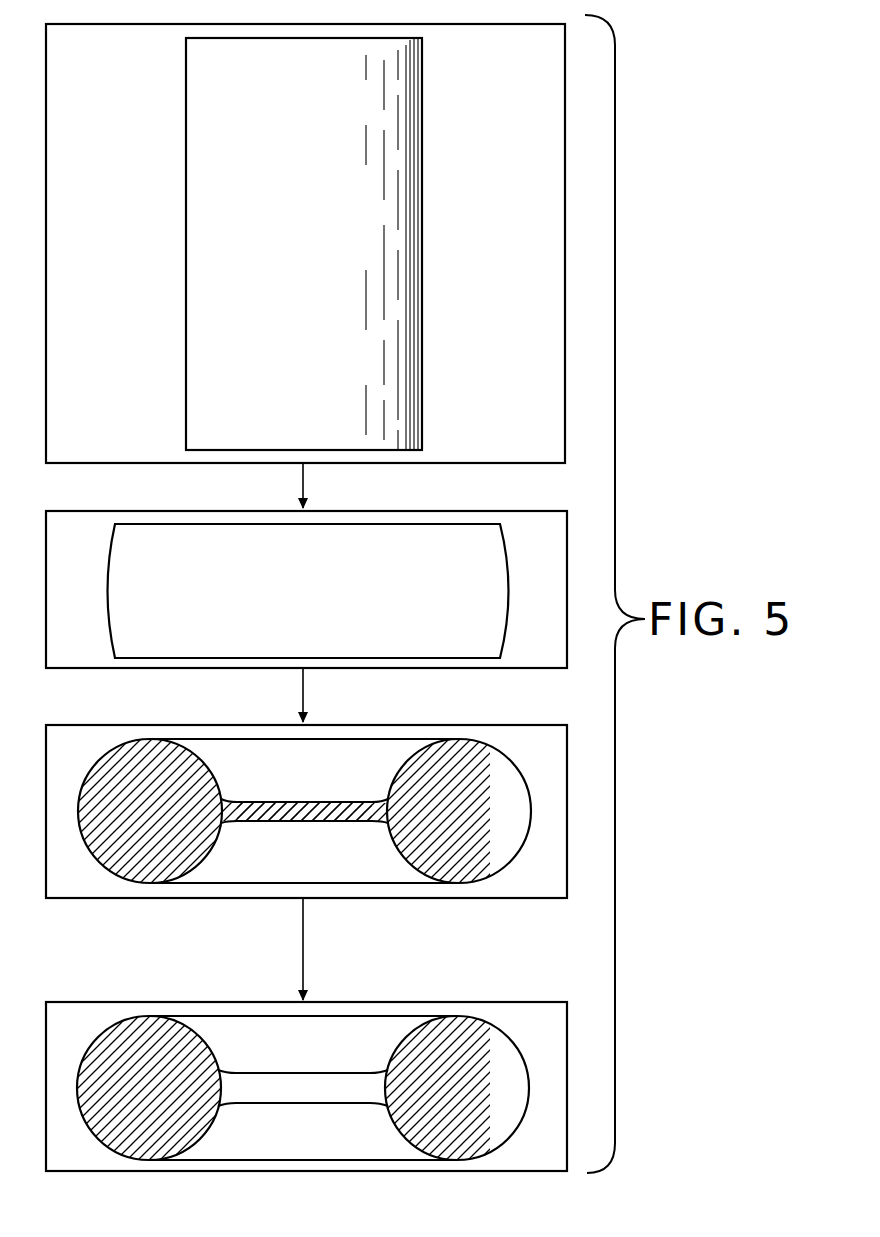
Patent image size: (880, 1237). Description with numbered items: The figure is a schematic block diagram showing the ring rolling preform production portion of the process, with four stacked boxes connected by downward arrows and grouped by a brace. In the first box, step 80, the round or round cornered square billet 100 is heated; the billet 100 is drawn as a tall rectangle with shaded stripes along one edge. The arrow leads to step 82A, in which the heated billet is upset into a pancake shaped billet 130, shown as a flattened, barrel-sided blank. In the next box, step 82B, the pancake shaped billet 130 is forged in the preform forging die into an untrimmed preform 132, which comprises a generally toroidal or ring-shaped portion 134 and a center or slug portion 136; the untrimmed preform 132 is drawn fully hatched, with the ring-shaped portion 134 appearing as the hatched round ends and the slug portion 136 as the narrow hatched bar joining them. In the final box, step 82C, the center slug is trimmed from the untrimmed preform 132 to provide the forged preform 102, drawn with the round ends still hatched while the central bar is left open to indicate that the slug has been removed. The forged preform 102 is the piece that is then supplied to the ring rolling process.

The heating step 80 is at (566, 250).
The round or round cornered square billet 100 is at (186, 189).
The upsetting step 82A is at (469, 511).
The pancake shaped billet 130 is at (178, 538).
The preform forging step 82B is at (469, 724).
The untrimmed preform 132 is at (294, 788).
The ring-shaped portion 134 is at (172, 775).
The center or slug portion 136 is at (313, 810).
The trimming step 82C is at (455, 1001).
The forged preform 102 is at (160, 1040).